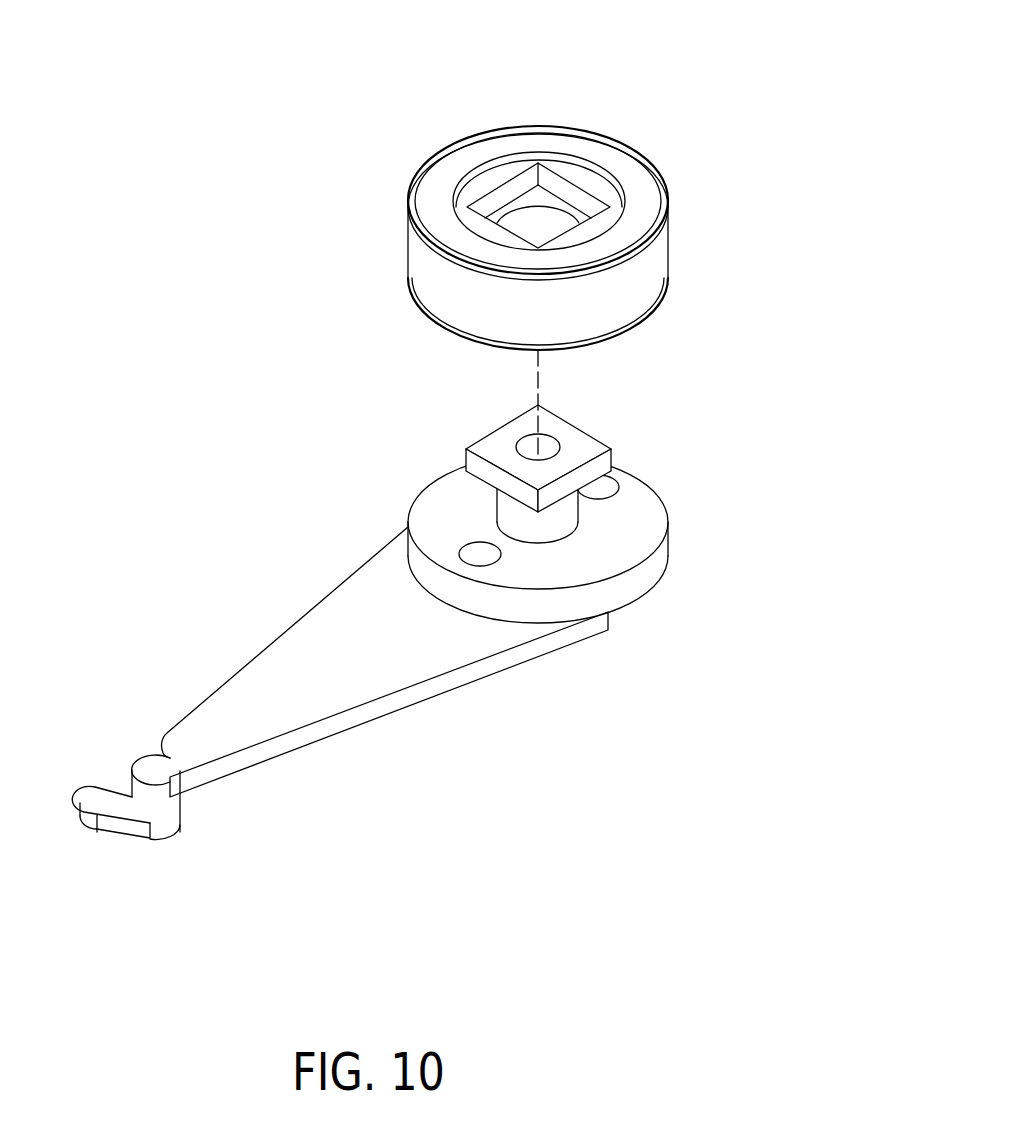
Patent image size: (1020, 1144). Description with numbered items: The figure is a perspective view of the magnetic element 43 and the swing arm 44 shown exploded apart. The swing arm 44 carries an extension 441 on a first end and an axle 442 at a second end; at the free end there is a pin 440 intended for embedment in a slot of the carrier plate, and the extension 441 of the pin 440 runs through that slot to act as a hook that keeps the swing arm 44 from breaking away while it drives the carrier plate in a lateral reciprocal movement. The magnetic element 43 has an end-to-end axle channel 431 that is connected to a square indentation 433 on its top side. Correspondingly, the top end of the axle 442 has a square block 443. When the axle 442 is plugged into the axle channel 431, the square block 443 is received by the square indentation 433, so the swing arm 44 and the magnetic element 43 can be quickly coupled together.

The magnetic element 43 is at (633, 288).
The axle channel 431 is at (540, 218).
The square indentation 433 is at (590, 192).
The swing arm 44 is at (410, 700).
The pin 440 is at (173, 813).
The extension 441 is at (117, 828).
The axle 442 is at (552, 520).
The square block 443 is at (590, 434).